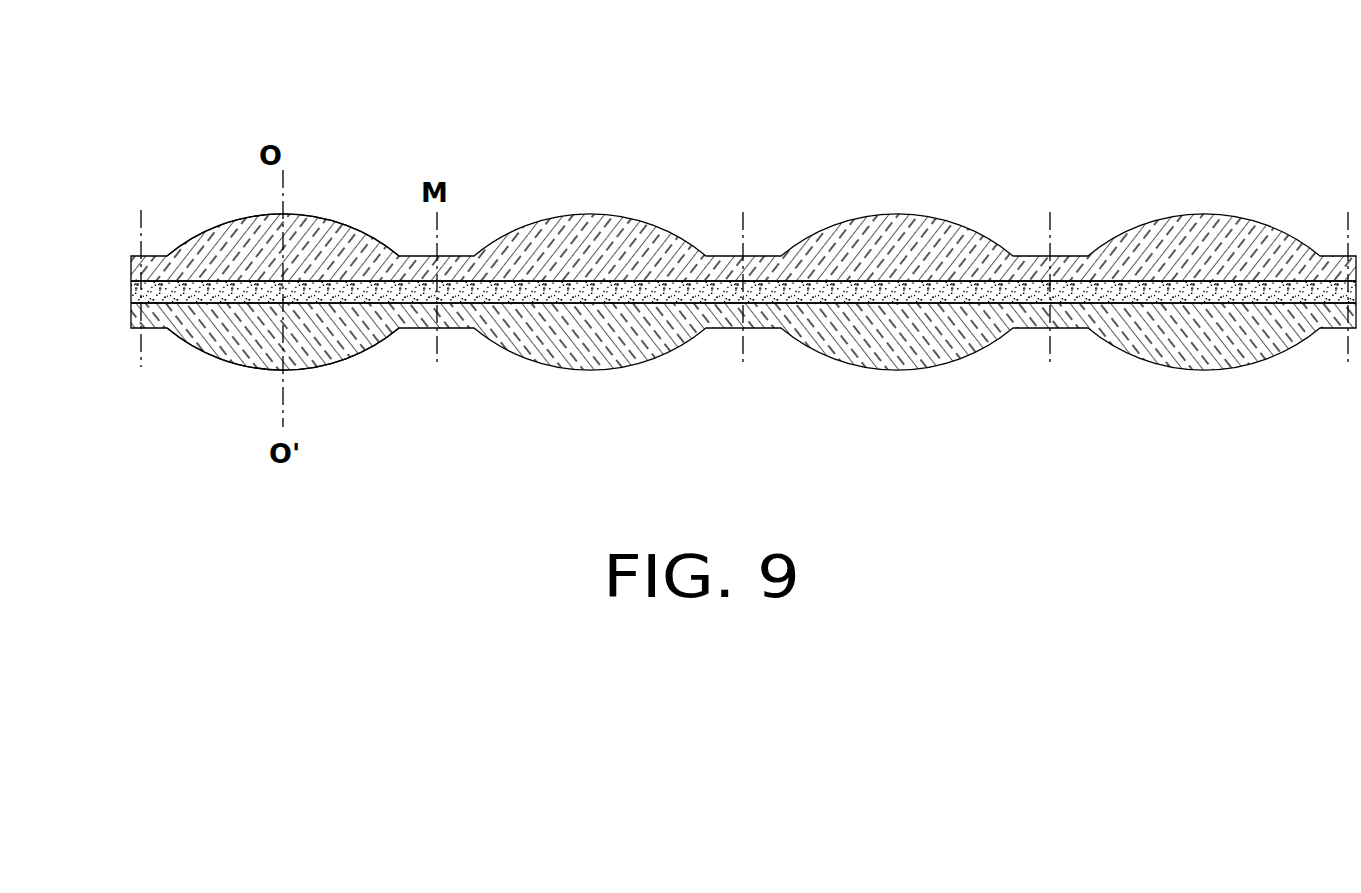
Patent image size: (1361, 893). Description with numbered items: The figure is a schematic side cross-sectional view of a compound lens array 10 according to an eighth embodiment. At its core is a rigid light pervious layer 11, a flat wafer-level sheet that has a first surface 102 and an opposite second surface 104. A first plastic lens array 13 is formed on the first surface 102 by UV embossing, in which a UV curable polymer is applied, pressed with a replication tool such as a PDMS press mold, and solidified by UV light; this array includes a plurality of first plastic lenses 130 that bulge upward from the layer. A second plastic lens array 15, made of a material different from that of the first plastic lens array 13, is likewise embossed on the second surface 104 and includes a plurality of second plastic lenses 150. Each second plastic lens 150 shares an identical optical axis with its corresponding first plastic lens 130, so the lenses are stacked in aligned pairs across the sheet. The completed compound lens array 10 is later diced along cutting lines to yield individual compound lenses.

The compound lens array 10 is at (685, 52).
The light pervious layer 11 is at (150, 297).
The first plastic lens array 13 is at (155, 272).
The first plastic lens 130 is at (226, 240).
The second plastic lens array 15 is at (153, 324).
The second plastic lens 150 is at (222, 343).
The first surface 102 is at (350, 270).
The second surface 104 is at (357, 316).